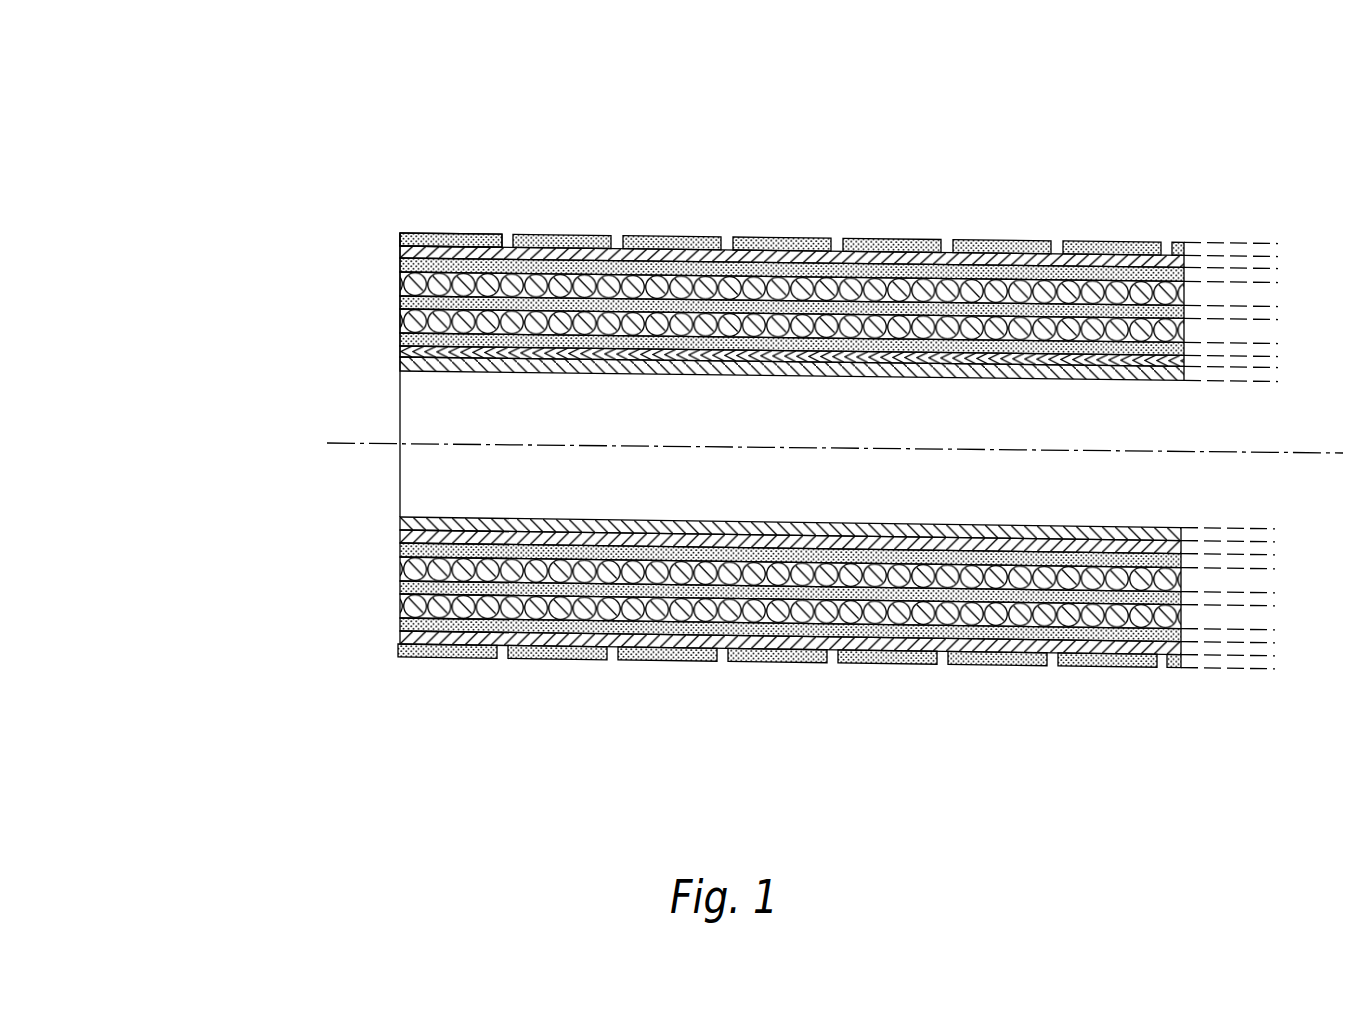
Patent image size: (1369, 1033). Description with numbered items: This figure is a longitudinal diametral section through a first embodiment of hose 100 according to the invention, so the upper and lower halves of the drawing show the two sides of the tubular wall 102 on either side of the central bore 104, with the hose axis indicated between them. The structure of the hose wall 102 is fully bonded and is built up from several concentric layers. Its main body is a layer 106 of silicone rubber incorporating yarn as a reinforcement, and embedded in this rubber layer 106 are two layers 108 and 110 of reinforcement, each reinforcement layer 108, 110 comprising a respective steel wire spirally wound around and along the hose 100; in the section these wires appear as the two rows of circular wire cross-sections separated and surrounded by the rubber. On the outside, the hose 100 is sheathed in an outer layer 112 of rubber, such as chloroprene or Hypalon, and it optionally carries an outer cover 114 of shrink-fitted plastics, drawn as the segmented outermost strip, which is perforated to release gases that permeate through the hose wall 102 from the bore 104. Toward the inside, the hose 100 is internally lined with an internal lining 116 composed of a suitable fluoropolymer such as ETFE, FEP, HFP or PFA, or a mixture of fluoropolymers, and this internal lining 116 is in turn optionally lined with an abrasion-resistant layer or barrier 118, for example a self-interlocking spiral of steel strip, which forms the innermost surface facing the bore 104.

The hose 100 is at (347, 139).
The tubular wall 102 is at (390, 517).
The bore 104 is at (478, 507).
The layer of silicone rubber 106 is at (400, 270).
The layer of reinforcement 108 is at (400, 322).
The layer of reinforcement 110 is at (400, 290).
The outer layer of rubber 112 is at (400, 236).
The outer cover 114 is at (477, 233).
The internal lining 116 is at (400, 350).
The abrasion-resistant layer or barrier 118 is at (400, 365).